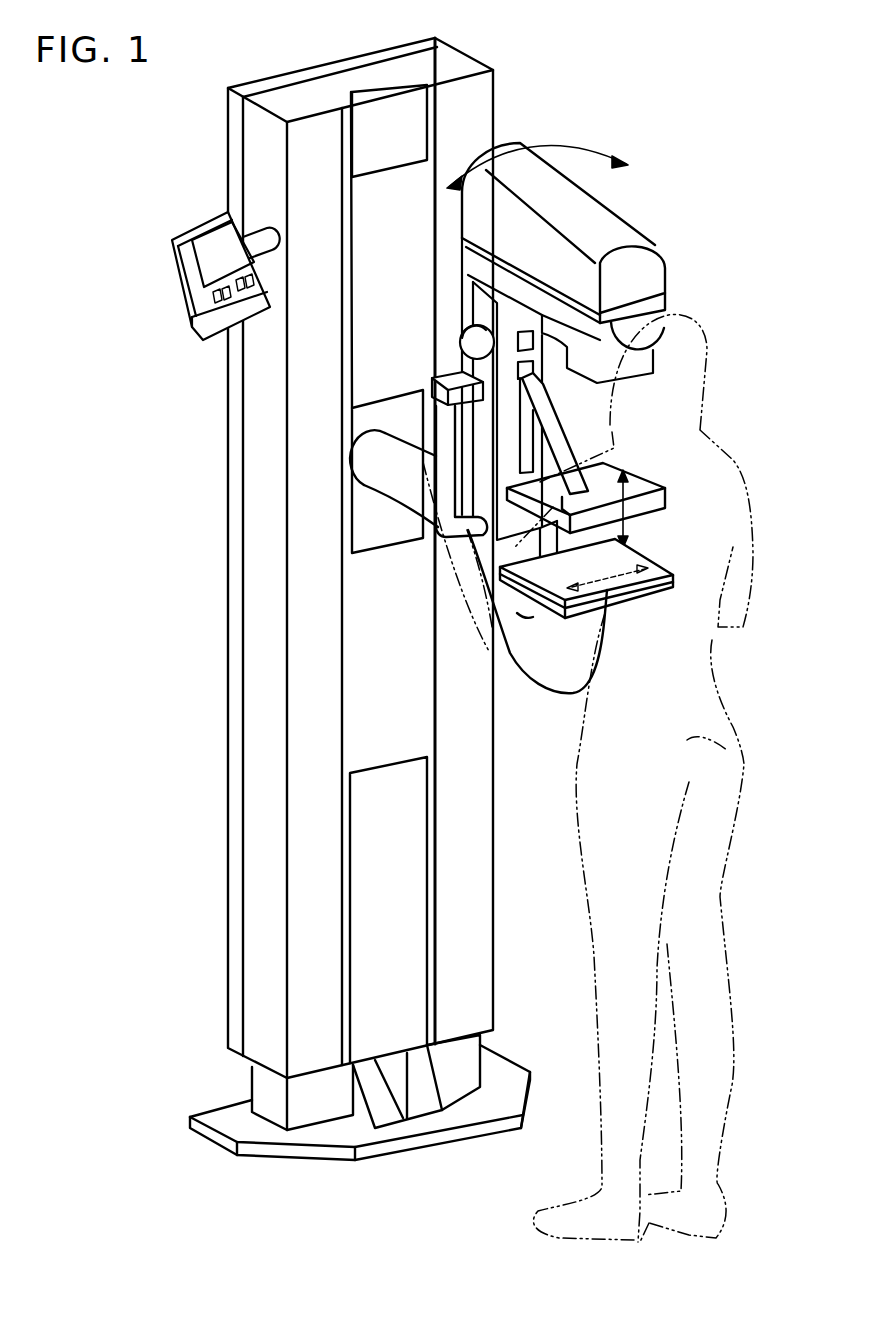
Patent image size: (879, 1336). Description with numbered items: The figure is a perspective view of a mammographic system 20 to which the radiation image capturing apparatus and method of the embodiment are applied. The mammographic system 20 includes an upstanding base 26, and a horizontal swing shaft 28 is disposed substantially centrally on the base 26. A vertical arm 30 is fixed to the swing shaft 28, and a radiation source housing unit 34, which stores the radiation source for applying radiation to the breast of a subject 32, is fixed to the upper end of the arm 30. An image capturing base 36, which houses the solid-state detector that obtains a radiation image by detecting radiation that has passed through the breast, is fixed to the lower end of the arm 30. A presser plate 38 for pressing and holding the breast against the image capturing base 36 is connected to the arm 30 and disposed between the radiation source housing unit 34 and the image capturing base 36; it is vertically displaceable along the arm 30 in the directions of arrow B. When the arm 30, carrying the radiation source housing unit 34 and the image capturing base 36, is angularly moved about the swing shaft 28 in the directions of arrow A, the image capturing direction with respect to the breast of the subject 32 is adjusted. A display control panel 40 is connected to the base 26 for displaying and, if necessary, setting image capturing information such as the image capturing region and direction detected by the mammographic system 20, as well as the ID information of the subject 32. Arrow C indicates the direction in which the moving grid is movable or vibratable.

The mammographic system 20 is at (763, 183).
The upstanding base 26 is at (268, 810).
The horizontal swing shaft 28 is at (393, 443).
The vertical arm 30 is at (497, 312).
The subject 32 is at (744, 750).
The radiation source housing unit 34 is at (647, 281).
The image capturing base 36 is at (607, 588).
The presser plate 38 is at (662, 500).
The display control panel 40 is at (207, 266).